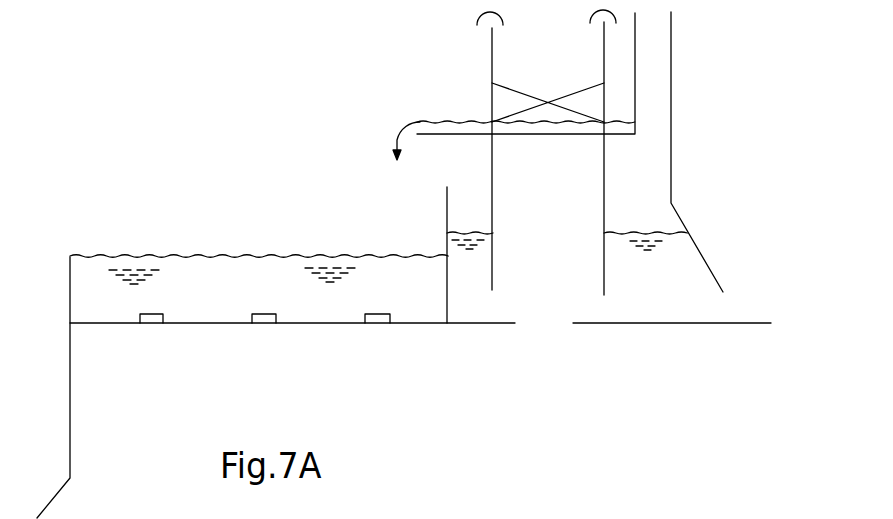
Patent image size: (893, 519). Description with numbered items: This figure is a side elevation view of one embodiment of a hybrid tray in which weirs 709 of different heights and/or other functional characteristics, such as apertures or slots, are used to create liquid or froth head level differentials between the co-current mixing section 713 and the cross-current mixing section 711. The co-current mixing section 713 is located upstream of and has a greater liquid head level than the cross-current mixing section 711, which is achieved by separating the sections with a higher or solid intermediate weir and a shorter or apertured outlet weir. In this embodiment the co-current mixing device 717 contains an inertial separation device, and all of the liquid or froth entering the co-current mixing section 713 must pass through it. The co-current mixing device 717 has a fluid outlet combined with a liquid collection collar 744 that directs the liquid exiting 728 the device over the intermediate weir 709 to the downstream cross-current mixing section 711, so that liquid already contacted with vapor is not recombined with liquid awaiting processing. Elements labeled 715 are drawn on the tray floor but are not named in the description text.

The weir 709 is at (70, 290).
The cross-current mixing section 711 is at (420, 325).
The co-current mixing section 713 is at (625, 323).
The support blocks 715 is at (152, 326).
The co-current mixing device 717 is at (492, 57).
The liquid collection collar 744 is at (468, 135).
The liquid exiting 728 is at (397, 135).